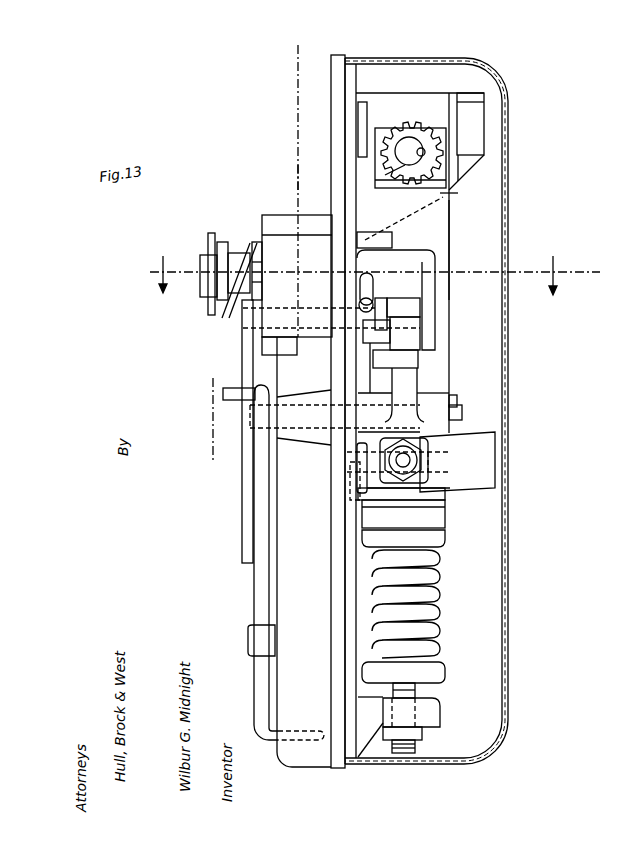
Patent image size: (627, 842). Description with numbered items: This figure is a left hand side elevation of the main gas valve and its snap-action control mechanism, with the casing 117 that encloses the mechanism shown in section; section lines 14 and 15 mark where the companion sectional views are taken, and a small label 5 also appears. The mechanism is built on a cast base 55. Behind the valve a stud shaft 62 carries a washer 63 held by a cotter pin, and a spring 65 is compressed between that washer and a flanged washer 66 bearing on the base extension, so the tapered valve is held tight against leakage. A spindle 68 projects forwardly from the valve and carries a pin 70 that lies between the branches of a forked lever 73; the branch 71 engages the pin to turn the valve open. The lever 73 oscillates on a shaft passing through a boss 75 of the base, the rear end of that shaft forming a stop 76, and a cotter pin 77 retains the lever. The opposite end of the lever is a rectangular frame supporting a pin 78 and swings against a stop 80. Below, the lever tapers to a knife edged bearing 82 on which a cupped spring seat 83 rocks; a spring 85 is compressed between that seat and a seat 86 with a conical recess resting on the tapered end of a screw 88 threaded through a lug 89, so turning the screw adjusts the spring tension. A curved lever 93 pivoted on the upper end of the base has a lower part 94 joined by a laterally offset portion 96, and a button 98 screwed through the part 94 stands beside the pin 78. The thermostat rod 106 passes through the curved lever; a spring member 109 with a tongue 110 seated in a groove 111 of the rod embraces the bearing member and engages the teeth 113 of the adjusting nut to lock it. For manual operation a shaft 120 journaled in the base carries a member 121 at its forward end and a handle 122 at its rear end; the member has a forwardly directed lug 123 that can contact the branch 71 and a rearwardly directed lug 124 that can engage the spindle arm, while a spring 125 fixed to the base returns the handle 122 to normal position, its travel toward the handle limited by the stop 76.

The frame 5 is at (303, 177).
The section line 14— 14 is at (363, 275).
The section line 15— 15 is at (316, 63).
The base 55 is at (318, 158).
The stud shaft 62 is at (245, 250).
The washer 63 is at (210, 312).
The spring 65 is at (232, 294).
The washer 66 is at (259, 273).
The spindle 68 is at (400, 222).
The pin 70 is at (407, 313).
The branch 71 is at (410, 326).
The forked lever 73 is at (410, 382).
The boss 75 is at (320, 437).
The stop 76 is at (462, 414).
The cotter pin 77 is at (455, 398).
The pin 78 is at (448, 479).
The stop 80 is at (360, 483).
The knife edged bearing 82 is at (445, 526).
The cupped spring seat 83 is at (445, 541).
The spring 85 is at (440, 595).
The seat 86 is at (420, 675).
The screw 88 is at (415, 697).
The lug 89 is at (440, 725).
The curved lever 93 is at (449, 246).
The part 94 is at (480, 447).
The laterally offset portion 96 is at (495, 488).
The button 98 is at (408, 464).
The rod 106 is at (408, 143).
The spring member 109 is at (432, 186).
The tongue 110 is at (422, 152).
The groove 111 is at (400, 173).
The teeth 113 is at (418, 128).
The casing 117 is at (508, 121).
The shaft 120 is at (280, 318).
The member 121 is at (382, 304).
The handle 122 is at (248, 512).
The forwardly directed lug 123 is at (411, 358).
The rearwardly directed lug 124 is at (375, 332).
The spring 125 is at (372, 282).